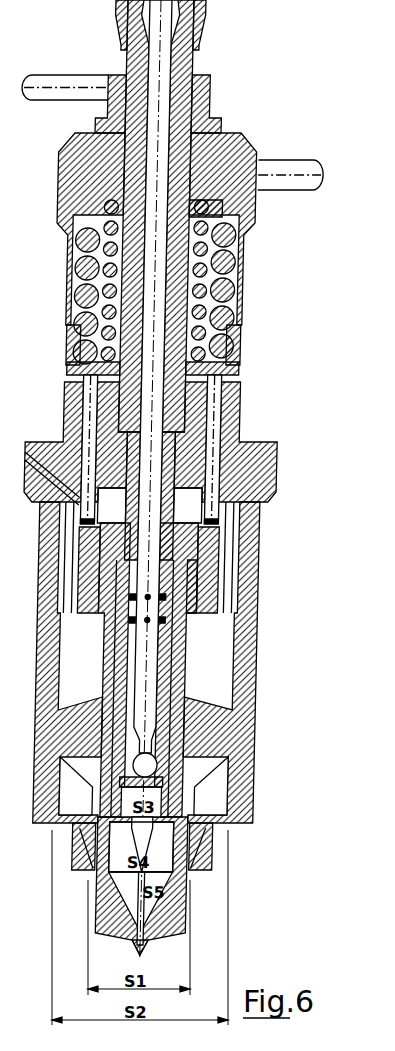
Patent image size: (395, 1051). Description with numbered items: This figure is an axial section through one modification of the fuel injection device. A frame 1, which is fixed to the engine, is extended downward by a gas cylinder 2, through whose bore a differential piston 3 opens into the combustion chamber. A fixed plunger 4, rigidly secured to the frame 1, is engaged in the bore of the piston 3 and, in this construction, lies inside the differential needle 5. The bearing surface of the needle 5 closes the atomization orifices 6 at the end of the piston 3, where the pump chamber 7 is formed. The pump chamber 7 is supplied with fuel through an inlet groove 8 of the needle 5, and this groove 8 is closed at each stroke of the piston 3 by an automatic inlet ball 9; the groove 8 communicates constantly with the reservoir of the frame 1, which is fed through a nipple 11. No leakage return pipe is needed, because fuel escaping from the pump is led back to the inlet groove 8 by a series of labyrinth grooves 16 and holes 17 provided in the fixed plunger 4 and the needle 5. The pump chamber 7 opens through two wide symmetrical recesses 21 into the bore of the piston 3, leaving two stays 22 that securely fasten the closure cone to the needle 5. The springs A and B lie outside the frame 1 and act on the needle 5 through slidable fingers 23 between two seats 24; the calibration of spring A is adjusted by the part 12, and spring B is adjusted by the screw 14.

The nipple 11 is at (182, 30).
The adjusting part 12 is at (200, 128).
The screw 14 is at (237, 172).
The spring B is at (247, 230).
The spring A is at (230, 283).
The seats 24 is at (245, 340).
The slidable fingers 23 is at (220, 388).
The inlet groove 8 is at (152, 497).
The frame 1 is at (253, 480).
The fixed plunger 4 is at (220, 533).
The holes 17 is at (180, 608).
The labyrinth grooves 16 is at (172, 637).
The gas cylinder 2 is at (242, 683).
The differential piston 3 is at (197, 738).
The automatic inlet ball 9 is at (160, 770).
The pump chamber 7 is at (200, 800).
The differential needle 5 is at (205, 822).
The symmetrical recesses 21 is at (157, 835).
The stays 22 is at (163, 850).
The atomization orifices 6 is at (157, 938).